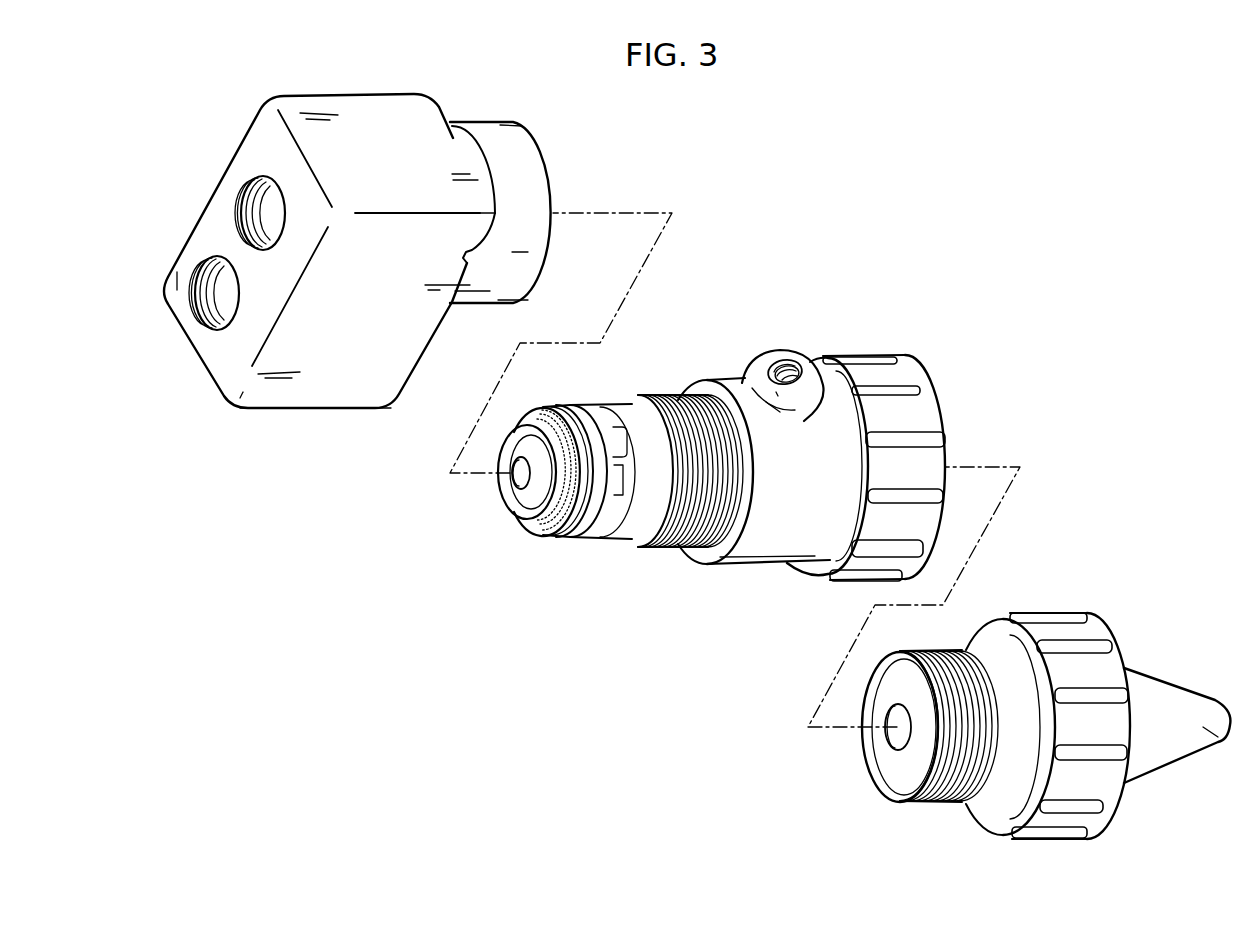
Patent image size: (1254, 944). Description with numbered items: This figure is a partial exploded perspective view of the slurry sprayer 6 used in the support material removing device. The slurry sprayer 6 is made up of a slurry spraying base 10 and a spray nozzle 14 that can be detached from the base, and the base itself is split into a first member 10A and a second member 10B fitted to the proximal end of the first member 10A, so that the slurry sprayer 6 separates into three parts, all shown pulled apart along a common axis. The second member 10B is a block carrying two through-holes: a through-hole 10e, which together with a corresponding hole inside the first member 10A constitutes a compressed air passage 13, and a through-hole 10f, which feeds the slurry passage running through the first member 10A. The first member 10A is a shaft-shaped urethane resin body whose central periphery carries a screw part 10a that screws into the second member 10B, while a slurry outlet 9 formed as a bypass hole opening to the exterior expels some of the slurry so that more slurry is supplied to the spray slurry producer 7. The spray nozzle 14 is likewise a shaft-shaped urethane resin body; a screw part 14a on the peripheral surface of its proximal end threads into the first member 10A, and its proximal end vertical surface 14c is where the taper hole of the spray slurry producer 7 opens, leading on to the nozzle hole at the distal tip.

The slurry sprayer 6 is at (934, 276).
The slurry spraying base 10 is at (716, 200).
The through-hole 10e is at (252, 195).
The through-hole 10f is at (200, 310).
The second member 10B is at (292, 400).
The first member 10A is at (748, 562).
The screw part 10a is at (693, 397).
The slurry outlet 9 is at (786, 352).
The compressed air passage 13 is at (518, 485).
The spray nozzle 14 is at (1163, 664).
The screw part 14a is at (960, 663).
The proximal end vertical surface 14c is at (878, 775).
The spray slurry producer 7 is at (892, 740).